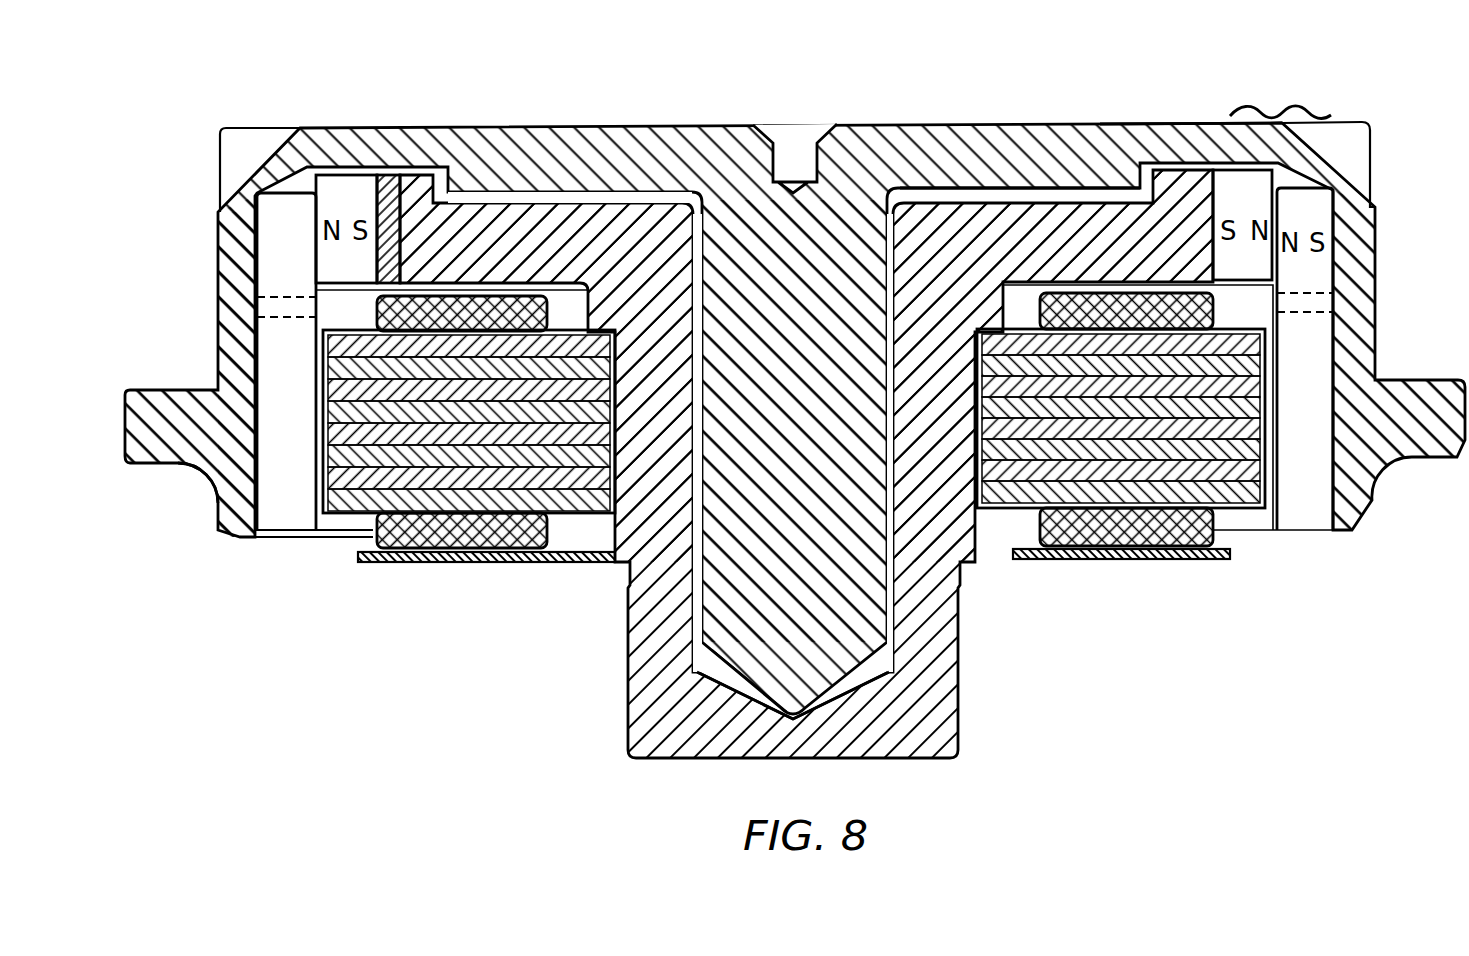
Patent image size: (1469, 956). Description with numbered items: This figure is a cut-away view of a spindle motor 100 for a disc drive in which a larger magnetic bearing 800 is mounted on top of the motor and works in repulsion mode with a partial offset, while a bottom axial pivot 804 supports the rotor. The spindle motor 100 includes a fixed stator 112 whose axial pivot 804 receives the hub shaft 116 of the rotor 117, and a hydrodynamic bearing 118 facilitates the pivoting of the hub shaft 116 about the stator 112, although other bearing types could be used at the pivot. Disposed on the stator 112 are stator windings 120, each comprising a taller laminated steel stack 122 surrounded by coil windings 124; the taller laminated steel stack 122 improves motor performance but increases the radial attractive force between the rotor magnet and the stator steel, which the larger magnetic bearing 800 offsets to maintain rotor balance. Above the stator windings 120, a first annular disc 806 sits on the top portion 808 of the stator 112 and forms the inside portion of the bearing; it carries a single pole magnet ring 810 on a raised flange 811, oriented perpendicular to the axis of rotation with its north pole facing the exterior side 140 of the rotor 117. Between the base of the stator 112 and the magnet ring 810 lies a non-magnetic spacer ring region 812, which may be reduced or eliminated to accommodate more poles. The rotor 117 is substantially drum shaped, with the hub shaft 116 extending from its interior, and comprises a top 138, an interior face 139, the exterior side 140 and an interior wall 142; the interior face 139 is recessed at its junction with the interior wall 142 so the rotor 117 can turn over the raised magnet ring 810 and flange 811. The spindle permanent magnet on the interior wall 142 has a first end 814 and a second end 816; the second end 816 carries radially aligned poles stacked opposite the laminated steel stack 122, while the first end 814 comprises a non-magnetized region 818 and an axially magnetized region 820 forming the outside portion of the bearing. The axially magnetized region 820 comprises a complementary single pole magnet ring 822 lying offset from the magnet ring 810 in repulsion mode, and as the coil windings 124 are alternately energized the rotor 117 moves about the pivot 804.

The spindle motor 100 is at (694, 813).
The stator 112 is at (943, 673).
The hub shaft 116 is at (833, 563).
The rotor 117 is at (902, 155).
The hydrodynamic bearing 118 is at (710, 683).
The stator windings 120 is at (1268, 520).
The laminated steel stack 122 is at (1202, 448).
The coil windings 124 is at (1120, 532).
The top 138 is at (1197, 122).
The interior face 139 is at (1015, 185).
The exterior side 140 is at (217, 350).
The interior wall 142 is at (215, 485).
The magnetic bearing 800 is at (1282, 110).
The axial pivot 804 is at (717, 678).
The first annular disc 806 is at (1090, 203).
The top portion 808 is at (660, 270).
The single pole magnet ring 810 is at (377, 175).
The raised flange 811 is at (437, 166).
The non-magnetic spacer ring region 812 is at (547, 247).
The first end 814 is at (226, 131).
The second end 816 is at (297, 532).
The non-magnetized region 818 is at (287, 310).
The axially magnetized region 820 is at (227, 211).
The complementary single pole magnet ring 822 is at (287, 247).